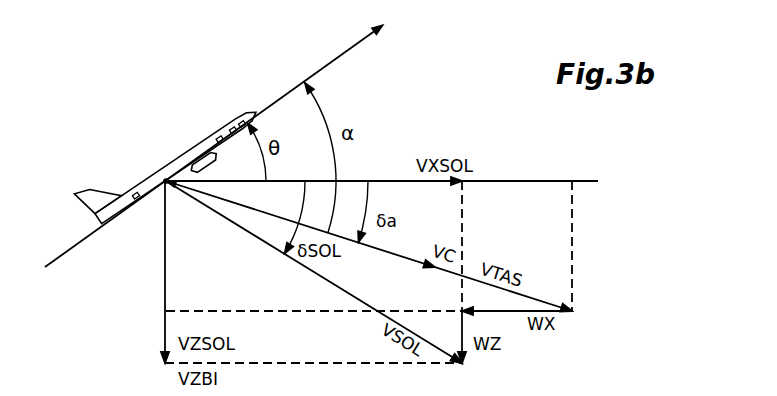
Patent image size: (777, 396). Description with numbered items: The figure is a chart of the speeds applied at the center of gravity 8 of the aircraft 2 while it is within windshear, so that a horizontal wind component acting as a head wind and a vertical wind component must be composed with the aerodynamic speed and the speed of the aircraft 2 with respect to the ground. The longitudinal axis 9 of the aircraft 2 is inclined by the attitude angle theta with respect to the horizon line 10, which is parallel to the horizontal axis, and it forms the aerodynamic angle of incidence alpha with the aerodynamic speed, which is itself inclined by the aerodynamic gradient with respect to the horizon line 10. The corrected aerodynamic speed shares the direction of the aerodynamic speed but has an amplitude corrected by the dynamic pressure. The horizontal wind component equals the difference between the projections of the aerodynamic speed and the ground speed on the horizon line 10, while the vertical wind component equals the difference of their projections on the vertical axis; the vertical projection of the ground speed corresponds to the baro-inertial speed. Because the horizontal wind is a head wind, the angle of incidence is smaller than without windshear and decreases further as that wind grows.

The aircraft 2 is at (224, 126).
The center of gravity 8 is at (166, 177).
The longitudinal axis 9 is at (316, 72).
The horizon line 10 is at (517, 181).